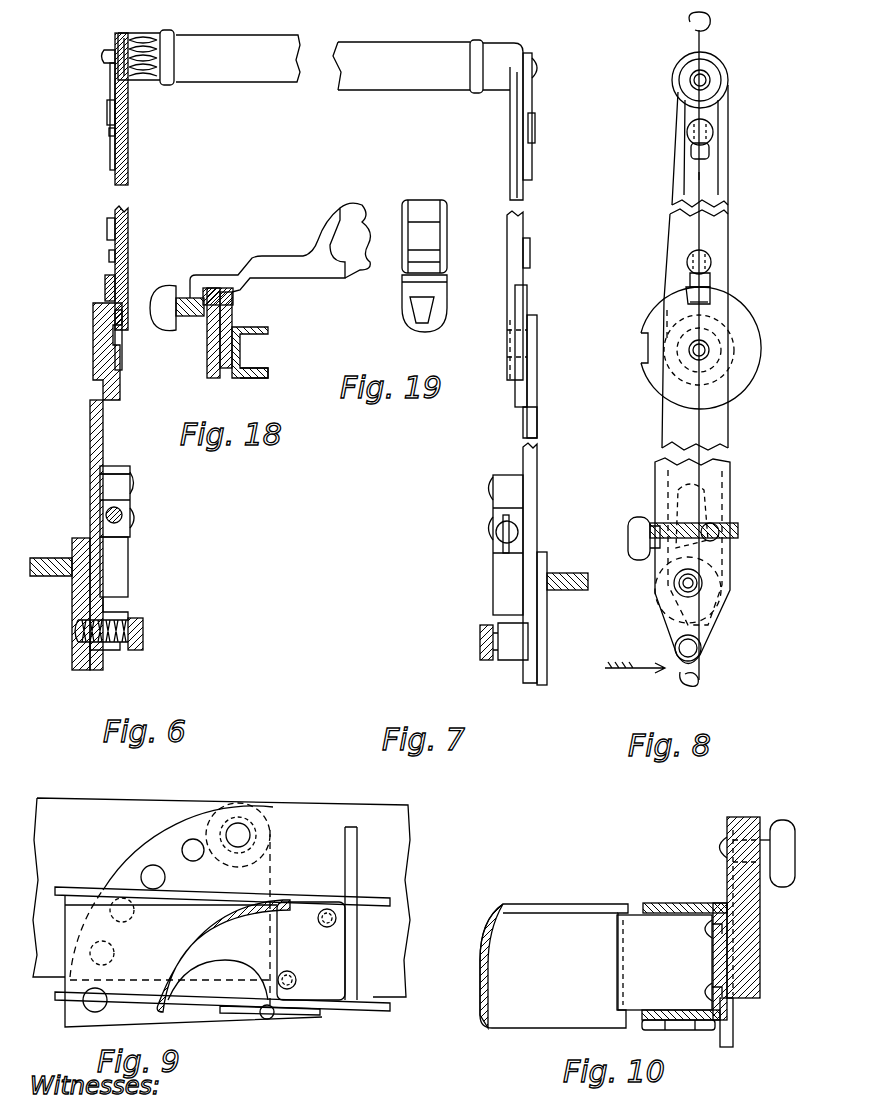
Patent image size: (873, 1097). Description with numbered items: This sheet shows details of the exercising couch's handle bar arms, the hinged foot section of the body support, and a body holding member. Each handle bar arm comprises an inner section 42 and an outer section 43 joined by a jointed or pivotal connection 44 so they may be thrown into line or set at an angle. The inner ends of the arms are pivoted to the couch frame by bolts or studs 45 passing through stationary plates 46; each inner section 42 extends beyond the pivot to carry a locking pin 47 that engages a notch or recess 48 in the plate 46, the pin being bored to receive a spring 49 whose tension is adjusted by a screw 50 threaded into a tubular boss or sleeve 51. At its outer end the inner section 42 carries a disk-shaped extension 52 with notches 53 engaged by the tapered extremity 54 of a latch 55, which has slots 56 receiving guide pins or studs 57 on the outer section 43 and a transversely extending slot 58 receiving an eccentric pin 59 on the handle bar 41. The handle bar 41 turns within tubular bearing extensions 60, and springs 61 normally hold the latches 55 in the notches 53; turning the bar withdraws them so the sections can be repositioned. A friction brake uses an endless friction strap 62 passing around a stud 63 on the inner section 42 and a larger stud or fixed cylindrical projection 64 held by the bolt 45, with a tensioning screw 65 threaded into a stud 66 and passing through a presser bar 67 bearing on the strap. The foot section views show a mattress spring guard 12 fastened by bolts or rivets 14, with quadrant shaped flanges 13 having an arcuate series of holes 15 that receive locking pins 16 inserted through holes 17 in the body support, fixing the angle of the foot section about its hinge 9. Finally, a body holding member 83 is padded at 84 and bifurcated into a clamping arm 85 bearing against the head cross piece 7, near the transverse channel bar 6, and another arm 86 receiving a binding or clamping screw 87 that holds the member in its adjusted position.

In FIG. 18, the transverse channel bar 6 is at (256, 378).
In FIG. 18, the head cross piece 7 is at (262, 350).
In FIG. 9, the hinge 9 is at (272, 1016).
In FIG. 10, the hinge 9 is at (660, 1030).
In FIG. 9, the mattress spring guard 12 is at (212, 922).
In FIG. 10, the mattress spring guard 12 is at (518, 903).
In FIG. 9, the quadrant shaped flanges 13 is at (188, 830).
In FIG. 10, the quadrant shaped flanges 13 is at (733, 1025).
In FIG. 9, the bolts or rivets 14 is at (330, 928).
In FIG. 10, the bolts or rivets 14 is at (700, 932).
In FIG. 9, the holes 15 is at (158, 872).
In FIG. 9, the locking pins 16 is at (240, 833).
In FIG. 10, the locking pins 16 is at (716, 848).
In FIG. 10, the holes 17 is at (742, 835).
In FIG. 7, the handle bar 41 is at (360, 50).
In FIG. 6, the inner section 42 is at (103, 420).
In FIG. 7, the inner section 42 is at (537, 462).
In FIG. 8, the inner section 42 is at (728, 428).
In FIG. 6, the outer section 43 is at (128, 166).
In FIG. 7, the outer section 43 is at (510, 152).
In FIG. 8, the outer section 43 is at (725, 195).
In FIG. 6, the jointed or pivotal connection 44 is at (93, 330).
In FIG. 7, the jointed or pivotal connection 44 is at (537, 348).
In FIG. 8, the jointed or pivotal connection 44 is at (706, 350).
In FIG. 6, the bolts or studs 45 is at (60, 558).
In FIG. 7, the bolts or studs 45 is at (560, 573).
In FIG. 8, the bolts or studs 45 is at (684, 590).
In FIG. 6, the stationary plates 46 is at (72, 603).
In FIG. 7, the stationary plates 46 is at (547, 615).
In FIG. 6, the locking pins 47 is at (78, 633).
In FIG. 8, the locking pins 47 is at (700, 655).
In FIG. 6, the notch or recess 48 is at (80, 645).
In FIG. 6, the spring 49 is at (115, 650).
In FIG. 6, the screw 50 is at (143, 635).
In FIG. 7, the screw 50 is at (480, 640).
In FIG. 6, the tubular boss or sleeve 51 is at (122, 612).
In FIG. 7, the tubular boss or sleeve 51 is at (515, 660).
In FIG. 6, the disk-shaped extension 52 is at (105, 292).
In FIG. 7, the disk-shaped extension 52 is at (522, 302).
In FIG. 8, the disk-shaped extension 52 is at (688, 302).
In FIG. 8, the notches 53 is at (722, 320).
In FIG. 8, the tapered extremity 54 is at (710, 292).
In FIG. 6, the latch 55 is at (110, 153).
In FIG. 7, the latch 55 is at (532, 172).
In FIG. 8, the latch 55 is at (695, 176).
In FIG. 6, the slots 56 is at (109, 132).
In FIG. 8, the slots 56 is at (709, 150).
In FIG. 6, the guide pins or studs 57 is at (107, 112).
In FIG. 7, the guide pins or studs 57 is at (535, 128).
In FIG. 8, the guide pins or studs 57 is at (712, 130).
In FIG. 8, the transversely extending slot 58 is at (715, 80).
In FIG. 6, the eccentric pin 59 is at (104, 56).
In FIG. 7, the eccentric pin 59 is at (540, 68).
In FIG. 8, the eccentric pin 59 is at (705, 78).
In FIG. 6, the tubular bearing extensions 60 is at (150, 33).
In FIG. 7, the tubular bearing extensions 60 is at (492, 43).
In FIG. 6, the springs 61 is at (147, 70).
In FIG. 6, the friction strap 62 is at (118, 466).
In FIG. 7, the friction strap 62 is at (505, 475).
In FIG. 8, the friction strap 62 is at (710, 550).
In FIG. 6, the stud 63 is at (136, 482).
In FIG. 7, the stud 63 is at (486, 488).
In FIG. 8, the stud 63 is at (704, 492).
In FIG. 6, the larger stud or fixed cylindrical projection 64 is at (120, 560).
In FIG. 8, the larger stud or fixed cylindrical projection 64 is at (702, 603).
In FIG. 6, the tensioning screw 65 is at (106, 513).
In FIG. 7, the tensioning screw 65 is at (503, 540).
In FIG. 8, the tensioning screw 65 is at (740, 534).
In FIG. 6, the stud 66 is at (136, 518).
In FIG. 7, the stud 66 is at (486, 528).
In FIG. 8, the stud 66 is at (718, 527).
In FIG. 7, the presser bar 67 is at (503, 545).
In FIG. 8, the presser bar 67 is at (655, 525).
In FIG. 18, the body holding members 83 is at (292, 257).
In FIG. 19, the body holding members 83 is at (447, 255).
In FIG. 18, the padding or upholstery 84 is at (350, 235).
In FIG. 19, the padding or upholstery 84 is at (418, 232).
In FIG. 18, the clamping arm 85 is at (233, 297).
In FIG. 18, the arm 86 is at (190, 290).
In FIG. 18, the binding or clamping screw 87 is at (192, 316).